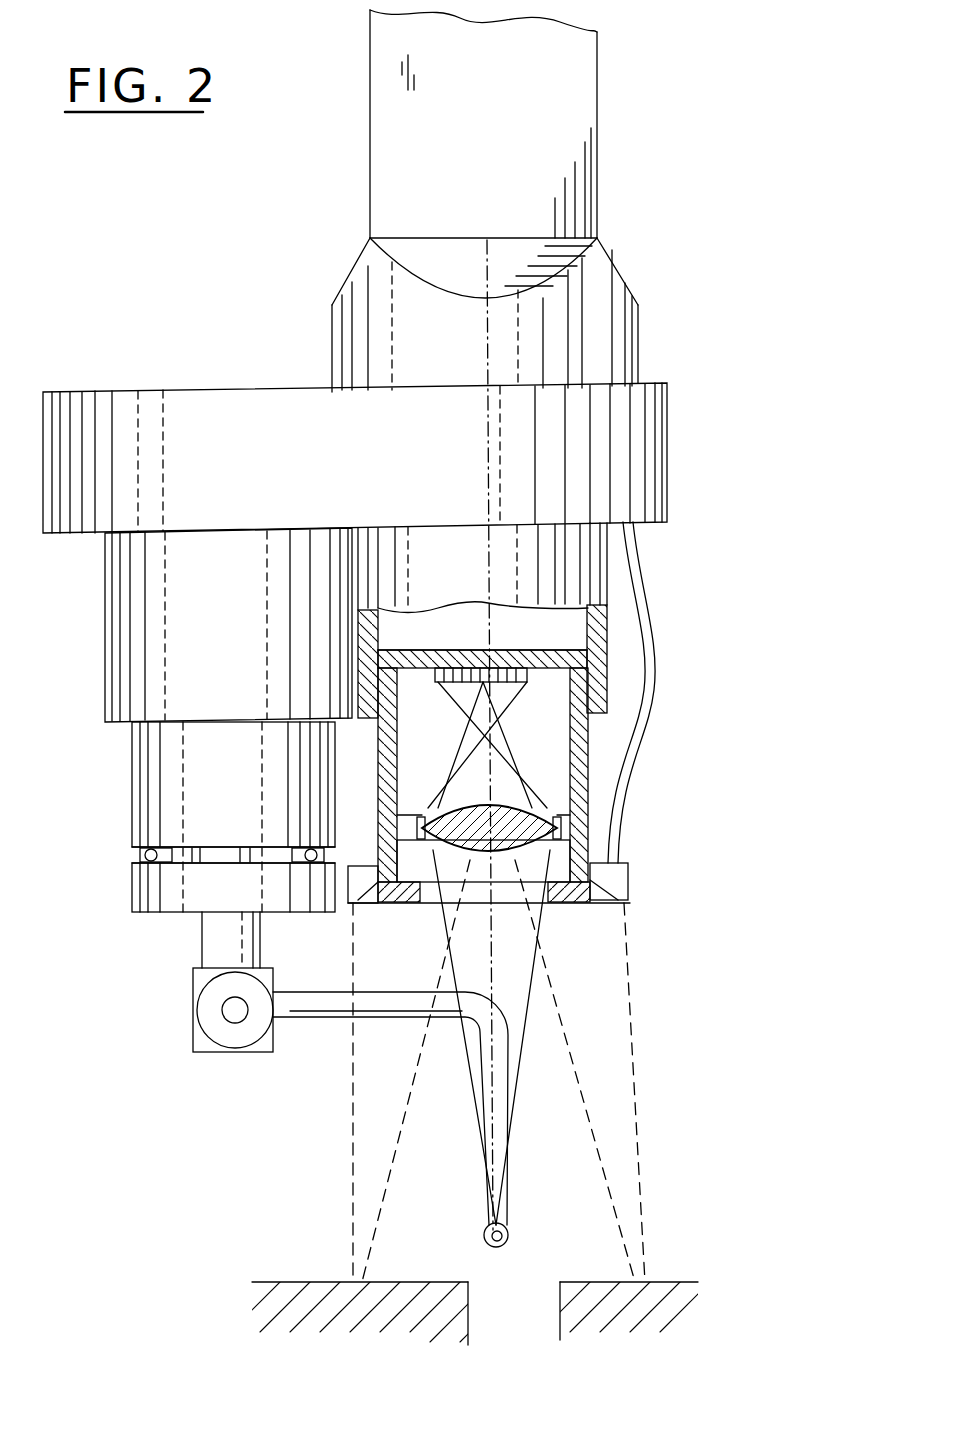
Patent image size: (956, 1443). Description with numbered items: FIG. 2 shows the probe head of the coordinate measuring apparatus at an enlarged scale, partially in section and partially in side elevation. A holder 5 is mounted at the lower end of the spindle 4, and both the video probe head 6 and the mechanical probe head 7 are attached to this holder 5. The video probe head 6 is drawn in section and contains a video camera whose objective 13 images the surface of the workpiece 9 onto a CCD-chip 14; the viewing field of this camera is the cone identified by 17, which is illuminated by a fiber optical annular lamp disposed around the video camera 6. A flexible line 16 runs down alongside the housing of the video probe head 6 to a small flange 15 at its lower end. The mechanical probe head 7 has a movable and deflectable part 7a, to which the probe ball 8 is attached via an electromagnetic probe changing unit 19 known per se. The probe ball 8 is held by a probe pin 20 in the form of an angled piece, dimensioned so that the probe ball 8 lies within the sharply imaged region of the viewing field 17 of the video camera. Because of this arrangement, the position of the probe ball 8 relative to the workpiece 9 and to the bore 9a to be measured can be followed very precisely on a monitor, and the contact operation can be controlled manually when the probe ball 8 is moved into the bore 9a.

The spindle 4 is at (582, 127).
The holder 5 is at (652, 424).
The video probe head 6 is at (383, 779).
The mechanical probe head 7 is at (105, 670).
The movable and deflectable part 7a is at (132, 808).
The probe ball 8 is at (485, 1240).
The workpiece 9 is at (672, 1287).
The bore 9a is at (541, 1295).
The objective 13 is at (458, 822).
The CCD-chip 14 is at (528, 674).
The flange of tube 15 is at (612, 880).
The flexible tube 16 is at (637, 572).
The viewing field 17 is at (554, 1032).
The electromagnetic probe changing unit 19 is at (136, 905).
The probe pin 20 is at (306, 1018).